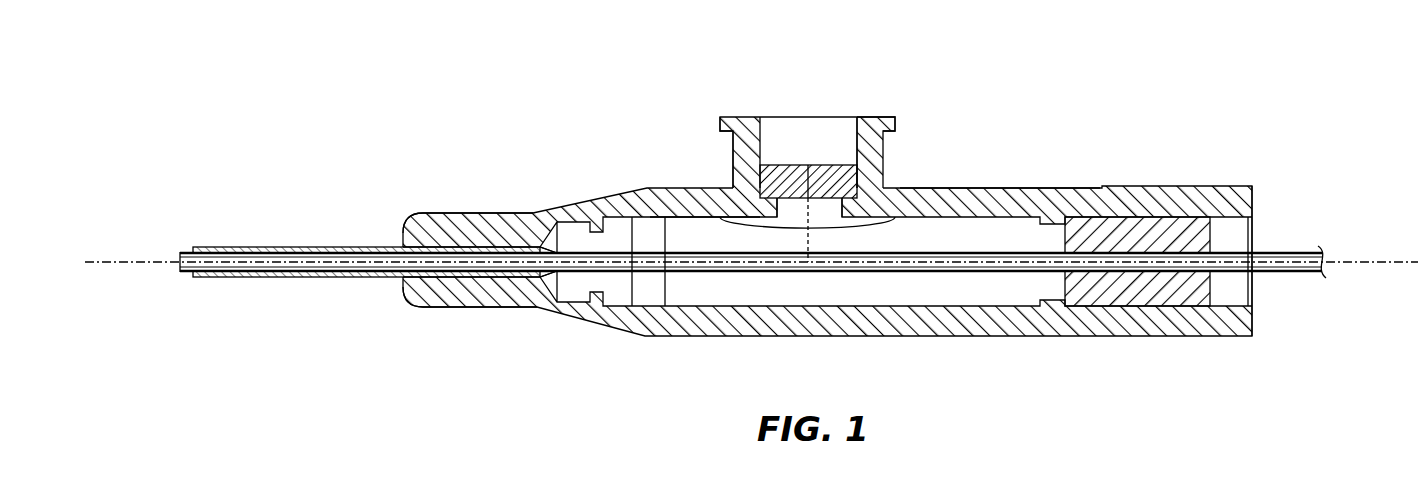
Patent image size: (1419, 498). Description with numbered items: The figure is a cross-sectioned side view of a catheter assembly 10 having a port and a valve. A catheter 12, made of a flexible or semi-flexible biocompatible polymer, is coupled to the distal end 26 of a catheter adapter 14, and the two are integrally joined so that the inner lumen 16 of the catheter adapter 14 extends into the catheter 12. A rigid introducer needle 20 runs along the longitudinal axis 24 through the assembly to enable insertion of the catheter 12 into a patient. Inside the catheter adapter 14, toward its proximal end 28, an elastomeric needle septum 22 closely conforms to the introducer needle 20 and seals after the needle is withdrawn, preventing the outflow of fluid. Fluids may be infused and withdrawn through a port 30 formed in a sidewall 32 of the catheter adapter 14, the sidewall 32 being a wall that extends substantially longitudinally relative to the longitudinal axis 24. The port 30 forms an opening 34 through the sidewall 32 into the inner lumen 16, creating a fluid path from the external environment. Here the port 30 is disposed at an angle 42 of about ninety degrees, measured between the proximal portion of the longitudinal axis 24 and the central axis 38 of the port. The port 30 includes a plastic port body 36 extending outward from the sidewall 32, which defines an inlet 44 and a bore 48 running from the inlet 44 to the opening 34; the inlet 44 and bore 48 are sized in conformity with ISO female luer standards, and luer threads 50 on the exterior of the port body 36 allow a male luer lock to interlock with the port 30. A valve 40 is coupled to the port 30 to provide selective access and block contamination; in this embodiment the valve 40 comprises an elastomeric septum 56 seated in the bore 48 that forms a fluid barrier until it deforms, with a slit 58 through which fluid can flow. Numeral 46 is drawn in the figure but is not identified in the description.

The catheter assembly 10 is at (447, 117).
The catheter 12 is at (280, 246).
The catheter adapter 14 is at (1063, 334).
The inner lumen 16 is at (712, 294).
The introducer needle 20 is at (187, 273).
The needle septum 22 is at (1192, 222).
The longitudinal axis 24 is at (125, 264).
The distal end 26 is at (410, 222).
The proximal end 28 is at (1248, 189).
The port 30 is at (897, 108).
The sidewall 32 is at (1002, 189).
The opening 34 is at (715, 215).
The port body 36 is at (732, 150).
The central axis 38 is at (880, 195).
The valve 40 is at (762, 163).
The angle 42 is at (812, 235).
The inlet 44 is at (838, 116).
The boss 46 is at (886, 222).
The bore 48 is at (830, 145).
The luer threads 50 is at (719, 122).
The septum 56 is at (772, 175).
The slit 58 is at (810, 165).